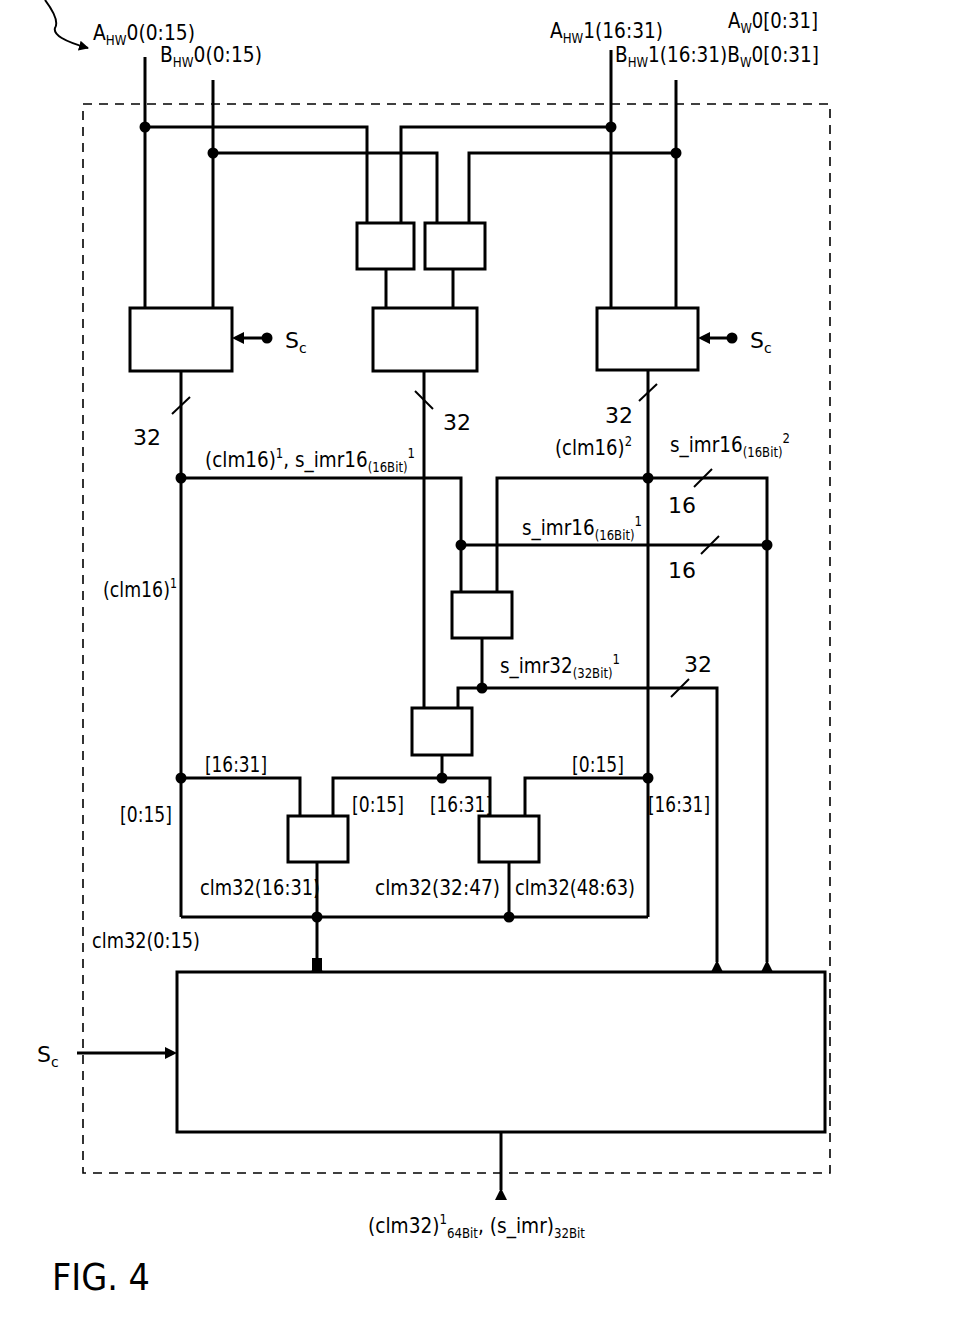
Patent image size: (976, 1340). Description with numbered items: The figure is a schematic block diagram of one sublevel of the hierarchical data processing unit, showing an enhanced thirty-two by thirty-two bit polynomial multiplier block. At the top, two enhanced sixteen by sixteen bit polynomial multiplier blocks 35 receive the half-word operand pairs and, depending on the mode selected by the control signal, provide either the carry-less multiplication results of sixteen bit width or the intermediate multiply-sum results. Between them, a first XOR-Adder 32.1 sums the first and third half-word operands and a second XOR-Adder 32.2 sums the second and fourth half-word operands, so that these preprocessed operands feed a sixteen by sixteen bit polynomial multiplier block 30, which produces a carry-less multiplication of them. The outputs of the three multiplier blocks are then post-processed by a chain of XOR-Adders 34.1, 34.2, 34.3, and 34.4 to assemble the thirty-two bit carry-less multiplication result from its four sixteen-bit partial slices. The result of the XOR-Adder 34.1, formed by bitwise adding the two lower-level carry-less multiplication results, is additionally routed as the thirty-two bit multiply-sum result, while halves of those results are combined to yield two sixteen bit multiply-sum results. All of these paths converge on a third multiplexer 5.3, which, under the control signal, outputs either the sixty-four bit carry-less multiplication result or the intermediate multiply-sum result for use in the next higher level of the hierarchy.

The enhanced 16×16 bit polynomial multiplier block 35 is at (135, 308).
The 16×16 bit polynomial multiplier block 30 is at (383, 318).
The first XOR-Adder 32.1 is at (362, 232).
The second XOR-Adder 32.2 is at (478, 234).
The XOR-Adder 34.1 is at (505, 606).
The XOR-Adder 34.2 is at (415, 718).
The XOR-Adder 34.3 is at (293, 838).
The XOR-Adder 34.4 is at (530, 836).
The third multiplexer 5.3 is at (742, 1118).